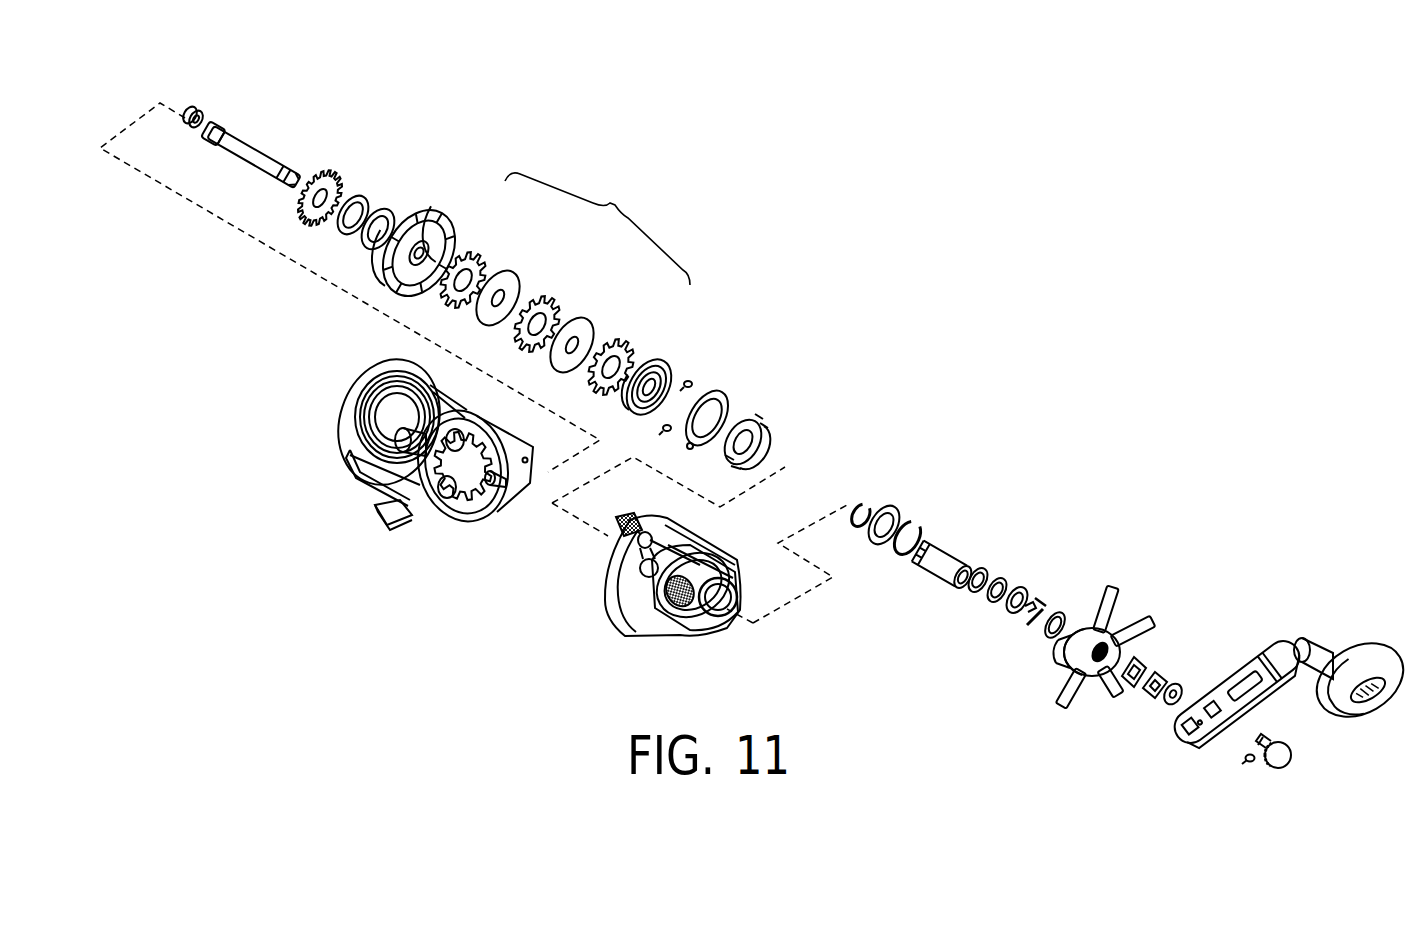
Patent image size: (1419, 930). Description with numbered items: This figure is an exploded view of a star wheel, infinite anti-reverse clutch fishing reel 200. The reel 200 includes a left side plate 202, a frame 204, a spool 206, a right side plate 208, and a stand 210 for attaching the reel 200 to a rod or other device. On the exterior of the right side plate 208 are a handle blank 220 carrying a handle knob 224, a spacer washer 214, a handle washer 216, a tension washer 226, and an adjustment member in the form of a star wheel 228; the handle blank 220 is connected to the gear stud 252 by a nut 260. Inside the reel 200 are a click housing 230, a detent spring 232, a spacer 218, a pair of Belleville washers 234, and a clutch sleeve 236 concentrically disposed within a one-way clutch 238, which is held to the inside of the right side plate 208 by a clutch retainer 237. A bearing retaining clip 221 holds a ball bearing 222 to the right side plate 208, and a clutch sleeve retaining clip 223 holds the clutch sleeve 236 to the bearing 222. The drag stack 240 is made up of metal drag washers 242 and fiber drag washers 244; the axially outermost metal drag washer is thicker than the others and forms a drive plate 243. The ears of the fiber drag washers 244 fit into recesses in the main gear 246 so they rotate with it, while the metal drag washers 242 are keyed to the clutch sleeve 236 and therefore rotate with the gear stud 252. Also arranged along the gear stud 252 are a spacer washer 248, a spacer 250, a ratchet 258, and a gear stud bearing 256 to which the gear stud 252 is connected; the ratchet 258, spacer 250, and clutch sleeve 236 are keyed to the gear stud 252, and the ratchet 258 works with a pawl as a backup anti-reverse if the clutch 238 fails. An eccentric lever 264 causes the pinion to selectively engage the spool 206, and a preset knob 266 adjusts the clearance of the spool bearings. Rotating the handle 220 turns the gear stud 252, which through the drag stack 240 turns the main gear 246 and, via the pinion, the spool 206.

The reel 200 is at (818, 222).
The left side plate 202 is at (350, 388).
The frame 204 is at (358, 477).
The spool 206 is at (442, 393).
The right side plate 208 is at (617, 627).
The stand 210 is at (373, 520).
The spacer washer 214 is at (1160, 703).
The handle washer 216 is at (1160, 688).
The spacer 218 is at (1046, 633).
The handle blank 220 is at (1170, 750).
The bearing retaining clip 221 is at (910, 523).
The bearing 222 is at (882, 507).
The clutch sleeve retaining clip 223 is at (862, 502).
The handle knob 224 is at (1377, 645).
The tension washer 226 is at (1132, 660).
The star wheel 228 is at (1110, 597).
The click housing 230 is at (1033, 597).
The detent spring 232 is at (1046, 612).
The Belleville washers 234 is at (982, 570).
The clutch sleeve 236 is at (960, 562).
The clutch retainer 237 is at (718, 400).
The one-way clutch 238 is at (757, 432).
The drag stack 240 is at (597, 229).
The metal drag washer 242 is at (507, 280).
The drive plate 243 is at (663, 360).
The fiber drag washer 244 is at (478, 250).
The main gear 246 is at (426, 224).
The spacer washer 248 is at (385, 214).
The spacer 250 is at (370, 202).
The gear stud 252 is at (258, 133).
The gear stud bearing 256 is at (196, 108).
The ratchet 258 is at (333, 173).
The nut 260 is at (1292, 757).
The eccentric lever 264 is at (622, 530).
The preset knob 266 is at (664, 628).